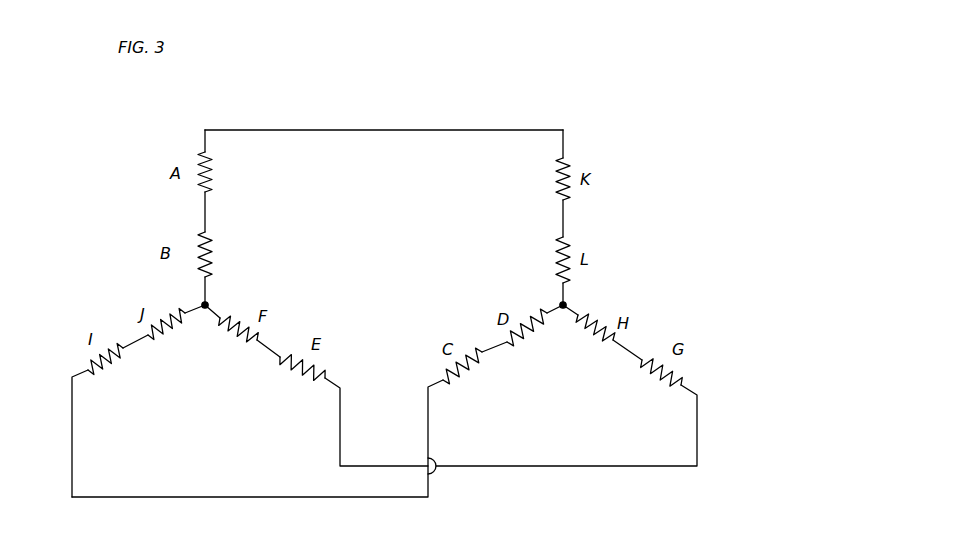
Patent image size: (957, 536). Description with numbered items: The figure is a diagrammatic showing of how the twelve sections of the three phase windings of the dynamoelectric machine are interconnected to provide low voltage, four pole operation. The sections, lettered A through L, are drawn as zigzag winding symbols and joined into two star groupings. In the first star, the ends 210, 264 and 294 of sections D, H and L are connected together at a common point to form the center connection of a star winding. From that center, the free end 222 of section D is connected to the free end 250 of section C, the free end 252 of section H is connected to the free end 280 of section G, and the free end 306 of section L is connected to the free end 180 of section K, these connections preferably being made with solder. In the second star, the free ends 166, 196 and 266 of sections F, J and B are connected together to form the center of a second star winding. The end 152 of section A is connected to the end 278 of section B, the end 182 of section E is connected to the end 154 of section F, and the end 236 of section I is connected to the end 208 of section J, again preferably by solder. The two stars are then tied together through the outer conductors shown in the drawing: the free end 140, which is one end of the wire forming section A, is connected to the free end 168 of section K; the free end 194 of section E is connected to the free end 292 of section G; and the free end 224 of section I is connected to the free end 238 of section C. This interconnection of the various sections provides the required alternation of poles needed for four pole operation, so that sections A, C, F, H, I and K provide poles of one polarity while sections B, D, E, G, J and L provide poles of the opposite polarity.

The end of wire of section A 140 is at (212, 143).
The end of section A 152 is at (212, 197).
The end of section B 278 is at (212, 233).
The free end of section B 266 is at (207, 288).
The free end of section J 196 is at (194, 303).
The end of section J 208 is at (150, 343).
The end of section I 236 is at (130, 353).
The free end of section I 224 is at (85, 378).
The free end of section F 166 is at (217, 316).
The end of section F 154 is at (260, 347).
The end of section E 182 is at (280, 359).
The free end of section E 194 is at (337, 387).
The free end of section K 168 is at (558, 149).
The free end of section K 180 is at (558, 201).
The free end of section L 306 is at (558, 236).
The end of section D 210 is at (552, 308).
The end of section L 294 is at (566, 297).
The end of section H 264 is at (575, 315).
The free end of section D 222 is at (505, 343).
The free end of section C 250 is at (485, 360).
The free end of section C 238 is at (440, 383).
The free end of section H 252 is at (616, 350).
The free end of section G 280 is at (635, 374).
The free end of section G 292 is at (690, 397).